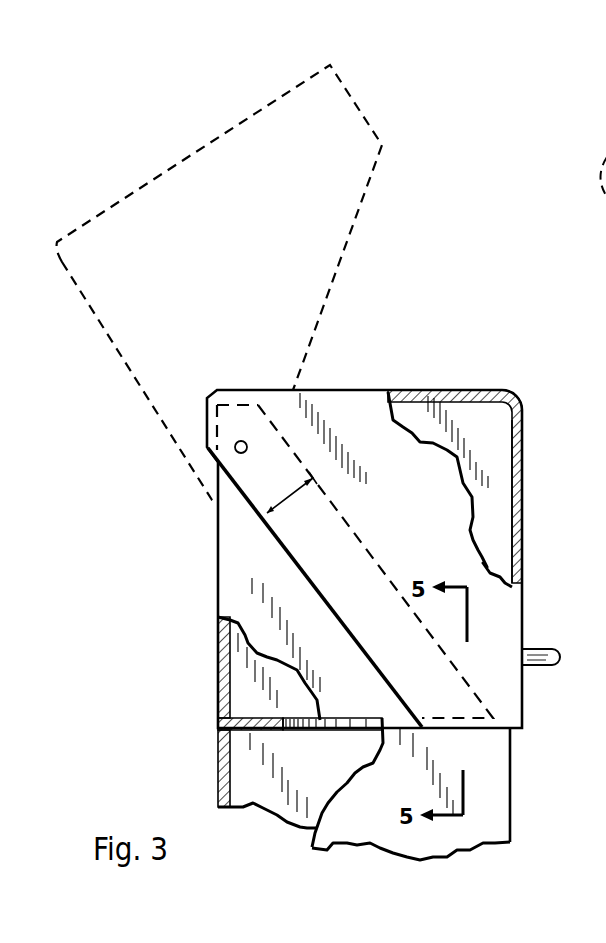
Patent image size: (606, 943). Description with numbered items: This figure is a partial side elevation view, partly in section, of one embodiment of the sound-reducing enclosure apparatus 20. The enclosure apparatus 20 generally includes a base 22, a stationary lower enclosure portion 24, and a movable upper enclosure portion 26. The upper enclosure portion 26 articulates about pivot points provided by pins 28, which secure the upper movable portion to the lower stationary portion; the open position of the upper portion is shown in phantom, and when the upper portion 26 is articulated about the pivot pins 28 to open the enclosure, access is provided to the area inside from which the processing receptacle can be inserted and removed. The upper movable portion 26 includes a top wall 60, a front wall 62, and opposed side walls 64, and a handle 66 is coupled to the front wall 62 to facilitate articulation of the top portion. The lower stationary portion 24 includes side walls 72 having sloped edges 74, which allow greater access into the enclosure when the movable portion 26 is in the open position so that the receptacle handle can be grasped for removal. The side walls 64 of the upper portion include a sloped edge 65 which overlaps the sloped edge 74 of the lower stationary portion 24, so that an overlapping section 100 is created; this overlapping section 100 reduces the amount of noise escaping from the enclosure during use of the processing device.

The enclosure apparatus 20 is at (400, 230).
The base 22 is at (518, 786).
The lower enclosure portion 24 is at (210, 541).
The upper enclosure portion 26 is at (472, 382).
The pins 28 is at (236, 451).
The top wall 60 is at (417, 391).
The front wall 62 is at (524, 489).
The side walls 64 is at (394, 457).
The sloped edge 65 is at (333, 618).
The handle 66 is at (558, 647).
The side walls 72 is at (315, 566).
The sloped edges 74 is at (350, 523).
The overlapping section 100 is at (284, 498).